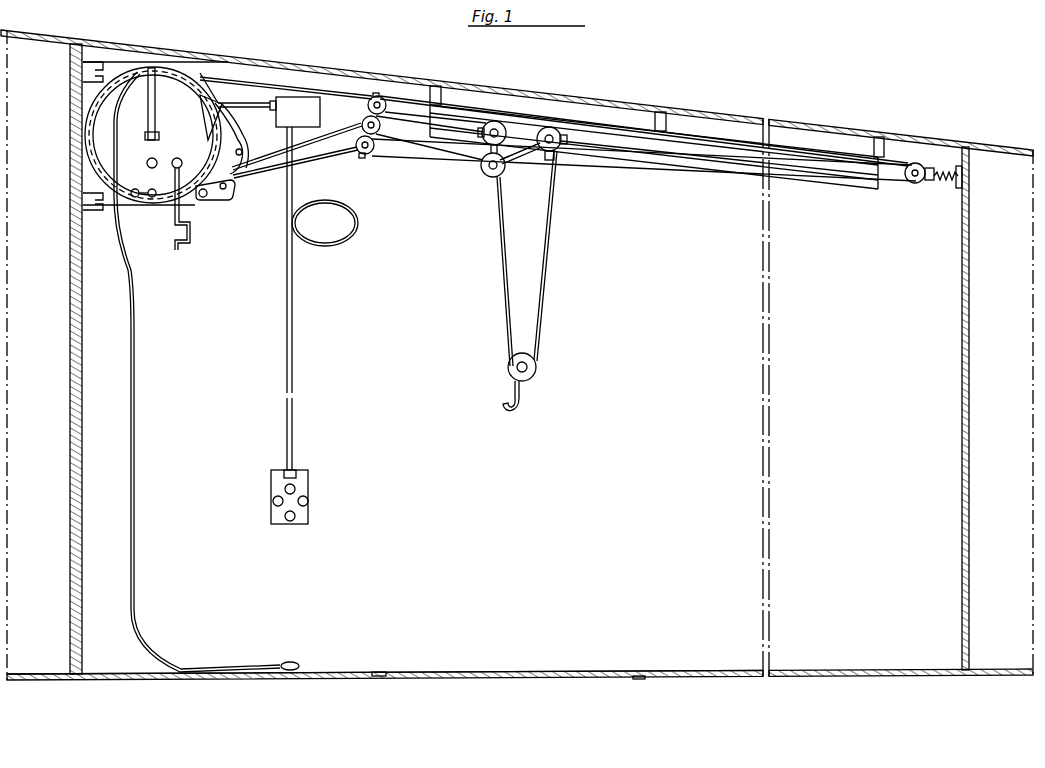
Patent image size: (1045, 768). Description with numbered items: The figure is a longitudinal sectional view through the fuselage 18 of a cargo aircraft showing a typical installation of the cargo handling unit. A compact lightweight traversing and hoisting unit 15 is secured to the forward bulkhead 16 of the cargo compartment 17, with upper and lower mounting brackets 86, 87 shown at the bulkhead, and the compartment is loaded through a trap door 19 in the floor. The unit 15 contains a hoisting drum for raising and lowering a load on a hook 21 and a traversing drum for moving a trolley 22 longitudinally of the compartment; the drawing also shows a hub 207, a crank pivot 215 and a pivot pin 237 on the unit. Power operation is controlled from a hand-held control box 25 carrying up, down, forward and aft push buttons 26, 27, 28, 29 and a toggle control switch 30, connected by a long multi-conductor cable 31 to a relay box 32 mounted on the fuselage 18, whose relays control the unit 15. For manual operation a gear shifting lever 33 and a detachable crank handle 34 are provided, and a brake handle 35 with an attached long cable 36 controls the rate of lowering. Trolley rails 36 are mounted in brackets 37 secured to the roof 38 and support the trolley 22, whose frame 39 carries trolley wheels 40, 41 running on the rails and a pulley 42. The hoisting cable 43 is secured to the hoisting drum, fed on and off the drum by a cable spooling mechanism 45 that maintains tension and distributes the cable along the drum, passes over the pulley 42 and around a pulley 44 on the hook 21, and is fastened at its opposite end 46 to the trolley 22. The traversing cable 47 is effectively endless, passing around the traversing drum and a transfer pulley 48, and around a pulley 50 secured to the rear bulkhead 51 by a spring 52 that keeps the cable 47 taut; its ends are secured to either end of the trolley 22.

The traversing and hoisting unit 15 is at (162, 216).
The forward bulkhead 16 is at (73, 432).
The cargo compartment 17 is at (610, 571).
The fuselage 18 is at (685, 110).
The trap door 19 is at (463, 671).
The hook 21 is at (534, 413).
The trolley 22 is at (483, 176).
The control box 25 is at (266, 531).
The up push button 26 is at (297, 489).
The down push button 27 is at (293, 522).
The forward push button 28 is at (309, 500).
The aft push button 29 is at (272, 502).
The toggle control switch 30 is at (298, 470).
The multi-conductor cable 31 is at (350, 243).
The relay box 32 is at (320, 112).
The gear shifting lever 33 is at (140, 205).
The detachable crank handle 34 is at (180, 250).
The brake handle 35 is at (156, 117).
The cable 36 is at (133, 380).
The brackets 37 is at (890, 138).
The roof 38 is at (595, 98).
The frame 39 is at (518, 160).
The trolley wheel 40 is at (492, 121).
The trolley wheel 41 is at (548, 127).
The pulley 42 is at (481, 165).
The hoisting cable 43 is at (312, 150).
The pulley 44 is at (526, 354).
The cable spooling mechanism 45 is at (231, 203).
The opposite end 46 is at (553, 160).
The traversing cable 47 is at (220, 103).
The transfer pulley 48 is at (248, 147).
The pulley 50 is at (910, 181).
The rear bulkhead 51 is at (962, 390).
The spring 52 is at (945, 180).
The upper bracket 86 is at (83, 71).
The lower bracket 87 is at (83, 205).
The drum hub 207 is at (157, 160).
The crank pivot 215 is at (181, 162).
The pivot pin 237 is at (203, 200).